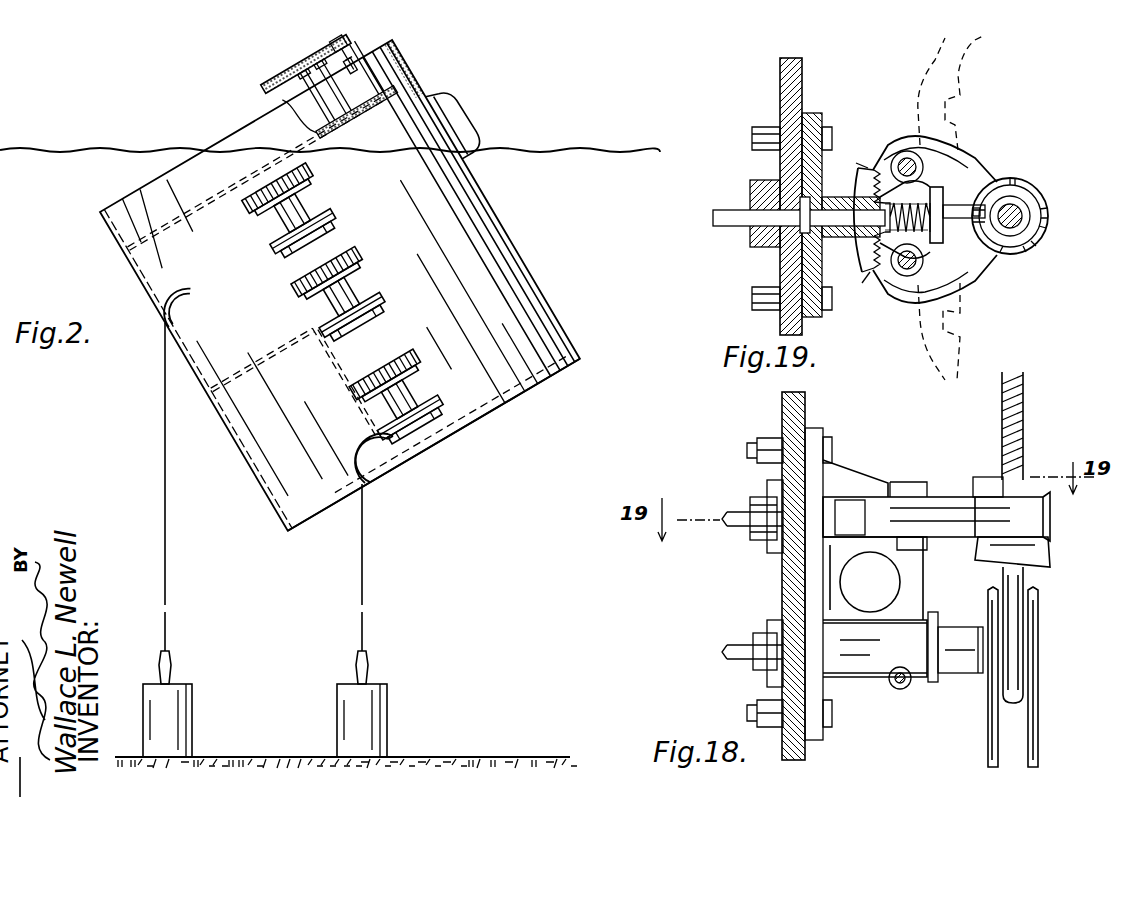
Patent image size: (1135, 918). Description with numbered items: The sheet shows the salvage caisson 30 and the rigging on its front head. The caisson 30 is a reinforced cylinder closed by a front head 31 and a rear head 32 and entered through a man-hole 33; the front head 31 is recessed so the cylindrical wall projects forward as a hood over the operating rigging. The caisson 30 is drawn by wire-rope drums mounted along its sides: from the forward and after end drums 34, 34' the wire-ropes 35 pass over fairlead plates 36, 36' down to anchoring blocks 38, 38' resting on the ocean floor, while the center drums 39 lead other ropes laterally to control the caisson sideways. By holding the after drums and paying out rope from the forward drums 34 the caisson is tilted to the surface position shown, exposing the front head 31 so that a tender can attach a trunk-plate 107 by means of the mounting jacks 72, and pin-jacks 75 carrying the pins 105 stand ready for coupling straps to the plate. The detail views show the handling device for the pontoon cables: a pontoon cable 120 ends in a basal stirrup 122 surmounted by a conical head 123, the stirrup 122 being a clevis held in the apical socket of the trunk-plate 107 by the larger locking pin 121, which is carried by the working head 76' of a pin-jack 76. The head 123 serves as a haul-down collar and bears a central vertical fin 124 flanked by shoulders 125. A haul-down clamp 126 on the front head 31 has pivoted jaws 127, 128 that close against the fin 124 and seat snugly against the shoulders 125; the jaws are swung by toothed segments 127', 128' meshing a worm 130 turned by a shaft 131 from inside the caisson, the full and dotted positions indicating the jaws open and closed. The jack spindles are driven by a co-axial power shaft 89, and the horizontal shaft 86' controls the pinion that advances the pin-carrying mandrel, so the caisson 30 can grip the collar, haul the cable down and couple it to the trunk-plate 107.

In FIG. 2, the caisson 30 is at (581, 359).
In FIG. 2, the front head 31 is at (376, 106).
In FIG. 19, the front head 31 is at (780, 88).
In FIG. 18, the front head 31 is at (805, 755).
In FIG. 2, the rear head 32 is at (487, 422).
In FIG. 2, the man-hole 33 is at (460, 113).
In FIG. 2, the forward end drum 34 is at (292, 212).
In FIG. 2, the after end drum 34' is at (402, 398).
In FIG. 2, the wire-rope 35 is at (166, 578).
In FIG. 2, the fairlead plate 36 is at (273, 484).
In FIG. 2, the fairlead plate 36' is at (380, 467).
In FIG. 2, the anchoring block 38 is at (183, 720).
In FIG. 2, the anchoring block 38' is at (345, 720).
In FIG. 2, the center drum 39 is at (366, 296).
In FIG. 2, the mounting jack 72 is at (320, 88).
In FIG. 2, the pin-jack 75 is at (345, 62).
In FIG. 18, the pin-jack 76 is at (875, 592).
In FIG. 18, the working head 76' is at (948, 643).
In FIG. 18, the horizontal shaft 86' is at (903, 694).
In FIG. 18, the power shaft 89 is at (740, 645).
In FIG. 2, the pin 105 is at (351, 72).
In FIG. 2, the trunk-plate 107 is at (318, 66).
In FIG. 18, the trunk-plate 107 is at (1040, 736).
In FIG. 19, the pontoon cable 120 is at (1018, 207).
In FIG. 18, the pontoon cable 120 is at (1025, 380).
In FIG. 18, the locking pin 121 is at (950, 676).
In FIG. 18, the stirrup 122 is at (1012, 686).
In FIG. 19, the conical head 123 is at (1049, 214).
In FIG. 18, the conical head 123 is at (1050, 553).
In FIG. 19, the fin 124 is at (977, 205).
In FIG. 18, the fin 124 is at (983, 487).
In FIG. 18, the shoulders 125 is at (1012, 554).
In FIG. 19, the haul-down clamp 126 is at (868, 141).
In FIG. 18, the haul-down clamp 126 is at (931, 474).
In FIG. 19, the pivoted jaw 127 is at (970, 106).
In FIG. 19, the toothed segment 127' is at (847, 163).
In FIG. 19, the pivoted jaw 128 is at (988, 315).
In FIG. 18, the pivoted jaw 128 is at (1031, 516).
In FIG. 19, the toothed segment 128' is at (854, 286).
In FIG. 19, the worm 130 is at (937, 187).
In FIG. 19, the shaft 131 is at (730, 228).
In FIG. 18, the shaft 131 is at (744, 509).